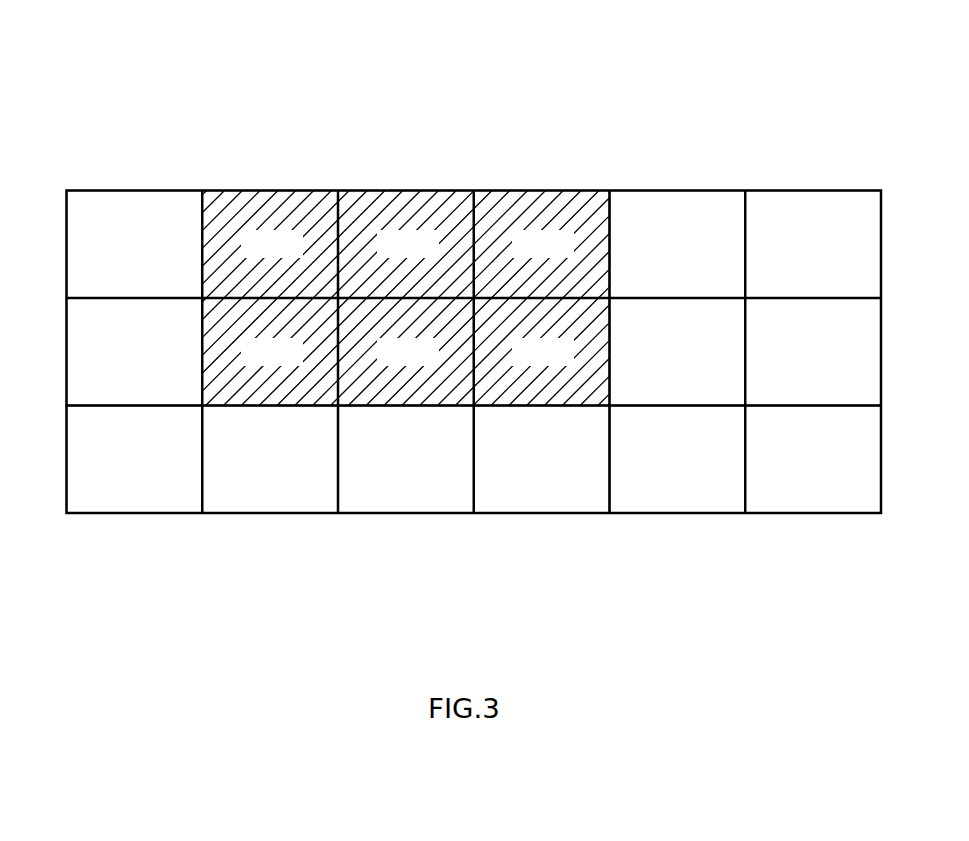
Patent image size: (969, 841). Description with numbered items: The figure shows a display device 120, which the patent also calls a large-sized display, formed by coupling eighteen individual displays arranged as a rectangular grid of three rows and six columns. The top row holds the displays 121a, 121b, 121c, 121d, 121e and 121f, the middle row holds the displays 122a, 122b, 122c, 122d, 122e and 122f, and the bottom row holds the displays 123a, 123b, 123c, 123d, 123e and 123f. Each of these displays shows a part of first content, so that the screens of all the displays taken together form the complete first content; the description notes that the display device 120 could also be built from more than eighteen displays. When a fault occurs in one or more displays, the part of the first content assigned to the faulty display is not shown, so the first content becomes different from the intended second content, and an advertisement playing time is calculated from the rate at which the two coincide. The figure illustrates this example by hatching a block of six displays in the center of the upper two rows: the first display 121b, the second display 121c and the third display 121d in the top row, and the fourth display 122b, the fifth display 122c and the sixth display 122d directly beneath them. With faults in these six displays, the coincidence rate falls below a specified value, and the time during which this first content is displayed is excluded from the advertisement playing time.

The display device 120 is at (474, 265).
The display 121a is at (135, 245).
The first display 121b is at (270, 245).
The second display 121c is at (406, 245).
The third display 121d is at (542, 245).
The display 121e is at (678, 245).
The display 121f is at (813, 245).
The display 122a is at (135, 352).
The fourth display 122b is at (270, 352).
The fifth display 122c is at (406, 352).
The sixth display 122d is at (542, 352).
The display 122e is at (678, 352).
The display 122f is at (813, 352).
The display 123a is at (135, 460).
The display 123b is at (270, 460).
The display 123c is at (406, 460).
The display 123d is at (542, 460).
The display 123e is at (678, 460).
The display 123f is at (813, 460).